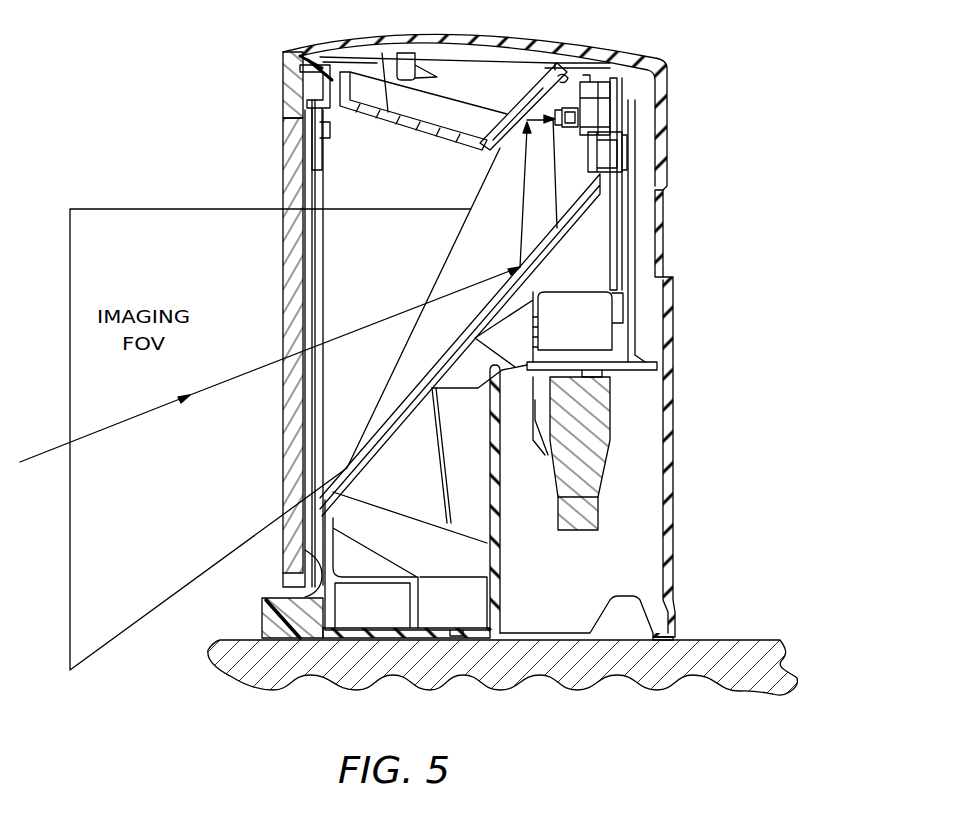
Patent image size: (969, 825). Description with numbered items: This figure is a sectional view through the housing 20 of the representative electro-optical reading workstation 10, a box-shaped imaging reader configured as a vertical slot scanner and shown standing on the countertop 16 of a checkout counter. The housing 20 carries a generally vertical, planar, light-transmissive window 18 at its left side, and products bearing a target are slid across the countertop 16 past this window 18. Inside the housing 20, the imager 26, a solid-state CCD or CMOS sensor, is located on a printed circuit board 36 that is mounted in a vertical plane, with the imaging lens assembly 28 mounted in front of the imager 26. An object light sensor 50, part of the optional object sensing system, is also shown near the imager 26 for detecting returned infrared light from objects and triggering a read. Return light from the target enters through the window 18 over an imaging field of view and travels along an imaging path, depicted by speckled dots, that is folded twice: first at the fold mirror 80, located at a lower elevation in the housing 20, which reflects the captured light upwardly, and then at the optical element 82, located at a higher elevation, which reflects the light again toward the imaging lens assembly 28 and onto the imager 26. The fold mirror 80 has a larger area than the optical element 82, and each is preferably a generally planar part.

The electro-optical reading workstation 10 is at (260, 71).
The countertop 16 is at (750, 656).
The window 18 is at (290, 178).
The housing 20 is at (290, 107).
The imager 26 is at (578, 118).
The imaging lens assembly 28 is at (586, 110).
The printed circuit board 36 is at (612, 222).
The object light sensor 50 is at (603, 158).
The fold mirror 80 is at (550, 233).
The optical element 82 is at (546, 95).